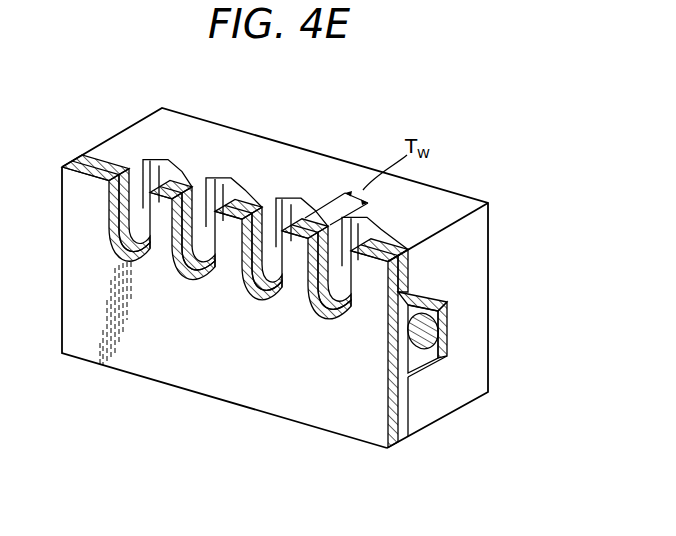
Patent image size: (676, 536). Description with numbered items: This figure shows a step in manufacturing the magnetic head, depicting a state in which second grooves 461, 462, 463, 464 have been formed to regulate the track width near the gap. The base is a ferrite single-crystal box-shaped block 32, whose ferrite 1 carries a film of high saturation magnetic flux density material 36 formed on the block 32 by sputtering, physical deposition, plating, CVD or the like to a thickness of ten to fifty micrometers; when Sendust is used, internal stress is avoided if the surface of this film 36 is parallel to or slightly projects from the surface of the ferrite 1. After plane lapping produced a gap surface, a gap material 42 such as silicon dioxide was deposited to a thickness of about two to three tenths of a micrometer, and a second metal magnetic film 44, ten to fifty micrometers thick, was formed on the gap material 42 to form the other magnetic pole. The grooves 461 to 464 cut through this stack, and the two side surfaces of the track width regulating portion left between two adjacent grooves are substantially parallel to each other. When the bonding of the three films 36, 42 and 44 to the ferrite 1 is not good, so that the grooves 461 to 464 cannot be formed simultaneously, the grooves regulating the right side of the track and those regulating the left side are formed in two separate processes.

The ferrite single-crystal box-shaped block 32 is at (482, 257).
The second metal magnetic film 44 is at (358, 427).
The second groove 461 is at (371, 237).
The second groove 462 is at (292, 207).
The second groove 463 is at (225, 185).
The second groove 464 is at (162, 168).
The gap material 42 is at (398, 443).
The high saturation magnetic flux density material 36 is at (408, 410).
The ferrite 1 is at (416, 385).